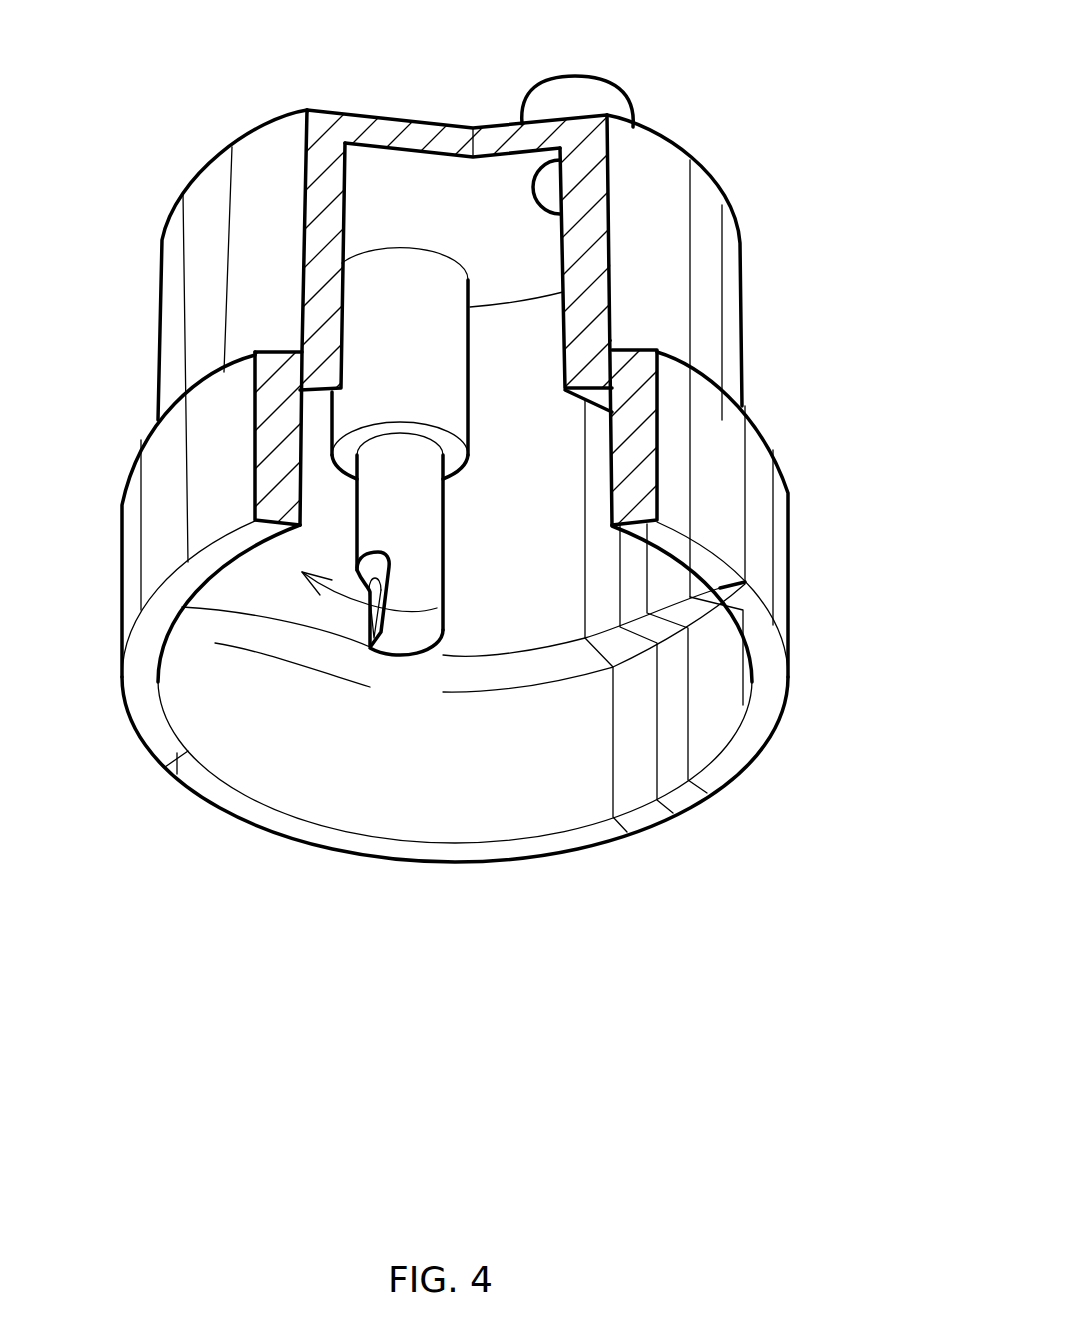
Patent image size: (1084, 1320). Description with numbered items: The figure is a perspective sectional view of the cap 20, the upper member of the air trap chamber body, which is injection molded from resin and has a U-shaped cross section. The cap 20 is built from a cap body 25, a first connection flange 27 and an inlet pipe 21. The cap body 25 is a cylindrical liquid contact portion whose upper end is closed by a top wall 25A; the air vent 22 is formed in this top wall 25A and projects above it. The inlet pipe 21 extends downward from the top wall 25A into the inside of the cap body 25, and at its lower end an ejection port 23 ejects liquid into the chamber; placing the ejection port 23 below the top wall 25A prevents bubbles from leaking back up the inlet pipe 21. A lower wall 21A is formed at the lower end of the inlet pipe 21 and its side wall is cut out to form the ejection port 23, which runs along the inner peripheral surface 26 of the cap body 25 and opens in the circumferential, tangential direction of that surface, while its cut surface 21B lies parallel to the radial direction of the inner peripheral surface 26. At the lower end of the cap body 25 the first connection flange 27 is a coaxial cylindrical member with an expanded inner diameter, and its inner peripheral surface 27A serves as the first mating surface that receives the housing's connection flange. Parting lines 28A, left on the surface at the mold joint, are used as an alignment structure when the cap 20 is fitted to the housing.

The cap 20 is at (262, 983).
The inlet pipe 21 is at (387, 302).
The lower wall 21A is at (400, 633).
The cut surface 21B is at (388, 592).
The air vent 22 is at (578, 75).
The ejection port 23 is at (387, 562).
The cap body 25 is at (742, 328).
The top wall 25A is at (388, 173).
The inner peripheral surface 26 is at (260, 573).
The first connection flange 27 is at (788, 569).
The inner peripheral surface of the first connection flange 27A is at (568, 797).
The parting line 28A is at (750, 630).